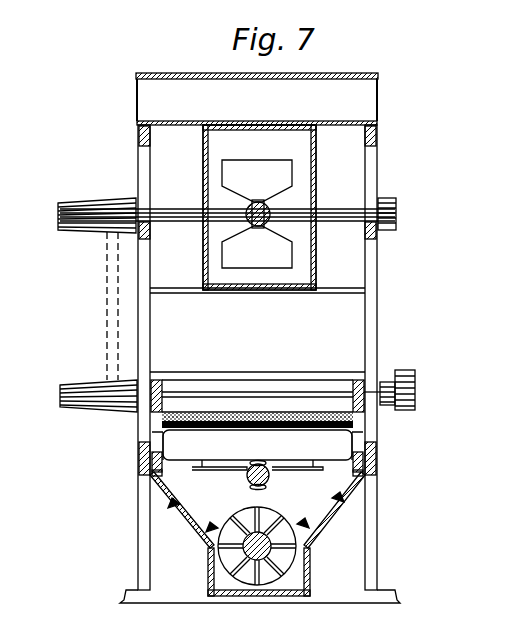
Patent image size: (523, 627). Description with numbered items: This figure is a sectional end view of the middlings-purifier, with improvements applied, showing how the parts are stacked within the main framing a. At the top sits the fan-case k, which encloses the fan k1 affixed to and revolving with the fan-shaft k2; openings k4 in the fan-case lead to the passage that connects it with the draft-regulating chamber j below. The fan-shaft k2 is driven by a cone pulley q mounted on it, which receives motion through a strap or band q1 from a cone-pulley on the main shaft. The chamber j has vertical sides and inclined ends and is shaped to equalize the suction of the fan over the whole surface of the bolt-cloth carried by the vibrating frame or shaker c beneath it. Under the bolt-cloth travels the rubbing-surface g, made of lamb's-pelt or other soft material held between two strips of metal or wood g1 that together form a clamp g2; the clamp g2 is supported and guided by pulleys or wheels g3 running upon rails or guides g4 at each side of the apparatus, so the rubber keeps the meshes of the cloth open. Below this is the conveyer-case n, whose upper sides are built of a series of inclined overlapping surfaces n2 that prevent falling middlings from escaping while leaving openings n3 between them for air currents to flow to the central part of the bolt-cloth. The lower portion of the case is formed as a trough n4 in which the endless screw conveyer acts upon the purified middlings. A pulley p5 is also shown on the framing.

The main framing a is at (260, 338).
The fan-case k is at (259, 207).
The fan k1 is at (257, 214).
The fan-shaft k2 is at (272, 212).
The openings in the fan-case k4 is at (227, 199).
The cone pulley q is at (227, 215).
The strap or band q1 is at (111, 306).
The compartment or chamber j is at (254, 327).
The vibrating frame or shaker c is at (257, 395).
The rubbing-surface g is at (257, 403).
The pulley p5 is at (237, 389).
The strips of metal or wood g1 is at (259, 463).
The clamp g2 is at (257, 445).
The pulleys or wheels g3 is at (257, 452).
The rails or guides g4 is at (264, 481).
The conveyer-case n is at (299, 489).
The overlapping surfaces n2 is at (257, 510).
The openings n3 is at (256, 509).
The trough n4 is at (259, 551).